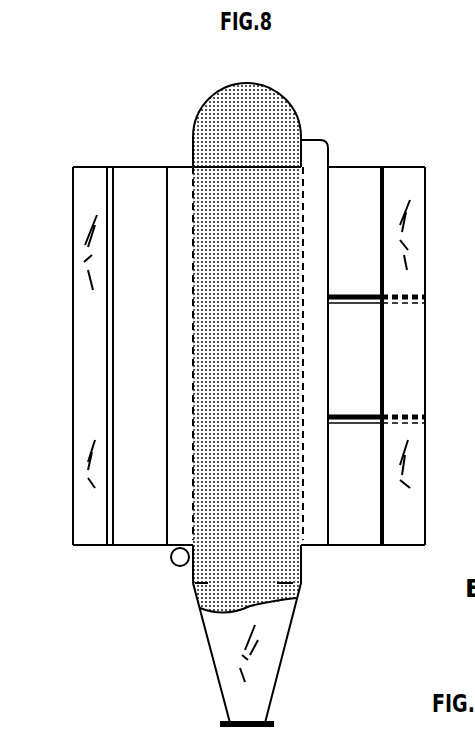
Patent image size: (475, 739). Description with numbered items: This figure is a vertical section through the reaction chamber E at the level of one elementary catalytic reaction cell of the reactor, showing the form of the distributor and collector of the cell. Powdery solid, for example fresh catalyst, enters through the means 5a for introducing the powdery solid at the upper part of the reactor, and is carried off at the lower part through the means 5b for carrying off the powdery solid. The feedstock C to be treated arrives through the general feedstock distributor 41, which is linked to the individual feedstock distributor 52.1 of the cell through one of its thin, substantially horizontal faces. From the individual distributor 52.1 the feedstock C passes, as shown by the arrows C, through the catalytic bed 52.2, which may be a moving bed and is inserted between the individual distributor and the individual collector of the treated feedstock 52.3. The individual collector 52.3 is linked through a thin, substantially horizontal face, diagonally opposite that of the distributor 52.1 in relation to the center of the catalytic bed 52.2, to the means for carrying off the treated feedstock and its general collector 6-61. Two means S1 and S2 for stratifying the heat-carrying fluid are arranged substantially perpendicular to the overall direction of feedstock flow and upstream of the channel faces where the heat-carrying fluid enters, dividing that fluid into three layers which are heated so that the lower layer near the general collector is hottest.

The means for introducing the powdery solid 5a is at (282, 95).
The means for carrying off the powdery solid 5b is at (228, 653).
The general feedstock distributor 41 is at (310, 140).
The individual feedstock distributor 52.1 is at (328, 190).
The catalytic bed 52.2 is at (240, 197).
The individual collector of the treated feedstock 52.3 is at (188, 185).
The means for stratifying the heat-carrying fluid S1 is at (360, 295).
The means for stratifying the heat-carrying fluid S2 is at (360, 415).
The means for carrying off the treated feedstock and general collector of the treate 6-61 is at (168, 557).
The reaction chamber E is at (66, 545).
The feedstock C is at (175, 272).